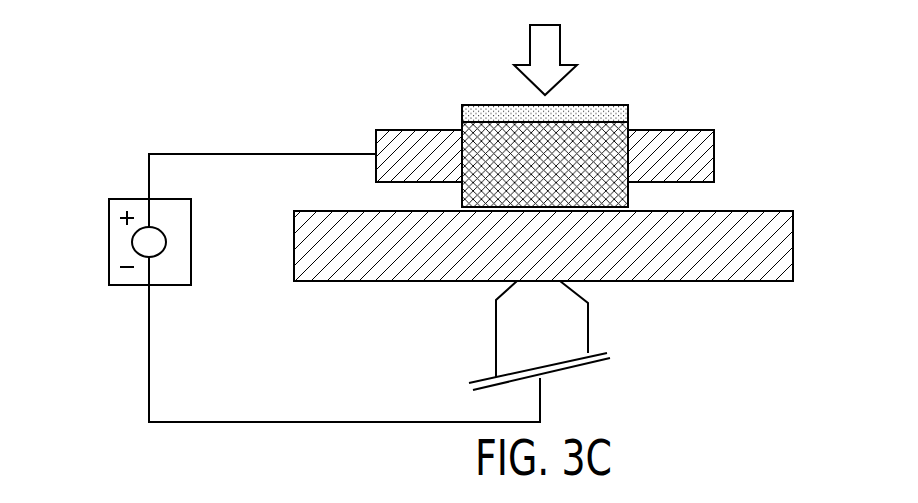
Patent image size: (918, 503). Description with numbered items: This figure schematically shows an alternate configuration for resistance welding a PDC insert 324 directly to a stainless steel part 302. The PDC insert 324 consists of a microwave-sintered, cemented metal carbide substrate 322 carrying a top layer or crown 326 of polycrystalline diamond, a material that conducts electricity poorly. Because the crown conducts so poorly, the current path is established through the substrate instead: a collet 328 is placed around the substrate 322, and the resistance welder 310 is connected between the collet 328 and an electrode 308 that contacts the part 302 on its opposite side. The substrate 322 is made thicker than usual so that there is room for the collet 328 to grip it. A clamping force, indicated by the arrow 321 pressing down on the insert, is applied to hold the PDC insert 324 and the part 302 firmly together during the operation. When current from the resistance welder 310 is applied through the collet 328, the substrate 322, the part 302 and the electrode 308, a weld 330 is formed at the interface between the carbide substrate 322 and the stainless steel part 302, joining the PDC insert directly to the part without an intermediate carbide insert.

The workpiece 302 is at (795, 248).
The electrode 308 is at (588, 328).
The resistance welder 310 is at (109, 247).
The arrow 321 is at (528, 47).
The microwave-sintered cemented metal carbide substrate 322 is at (470, 183).
The PDC insert 324 is at (602, 100).
The top layer or crown 326 is at (470, 116).
The collet 328 is at (715, 155).
The weld 330 is at (635, 207).